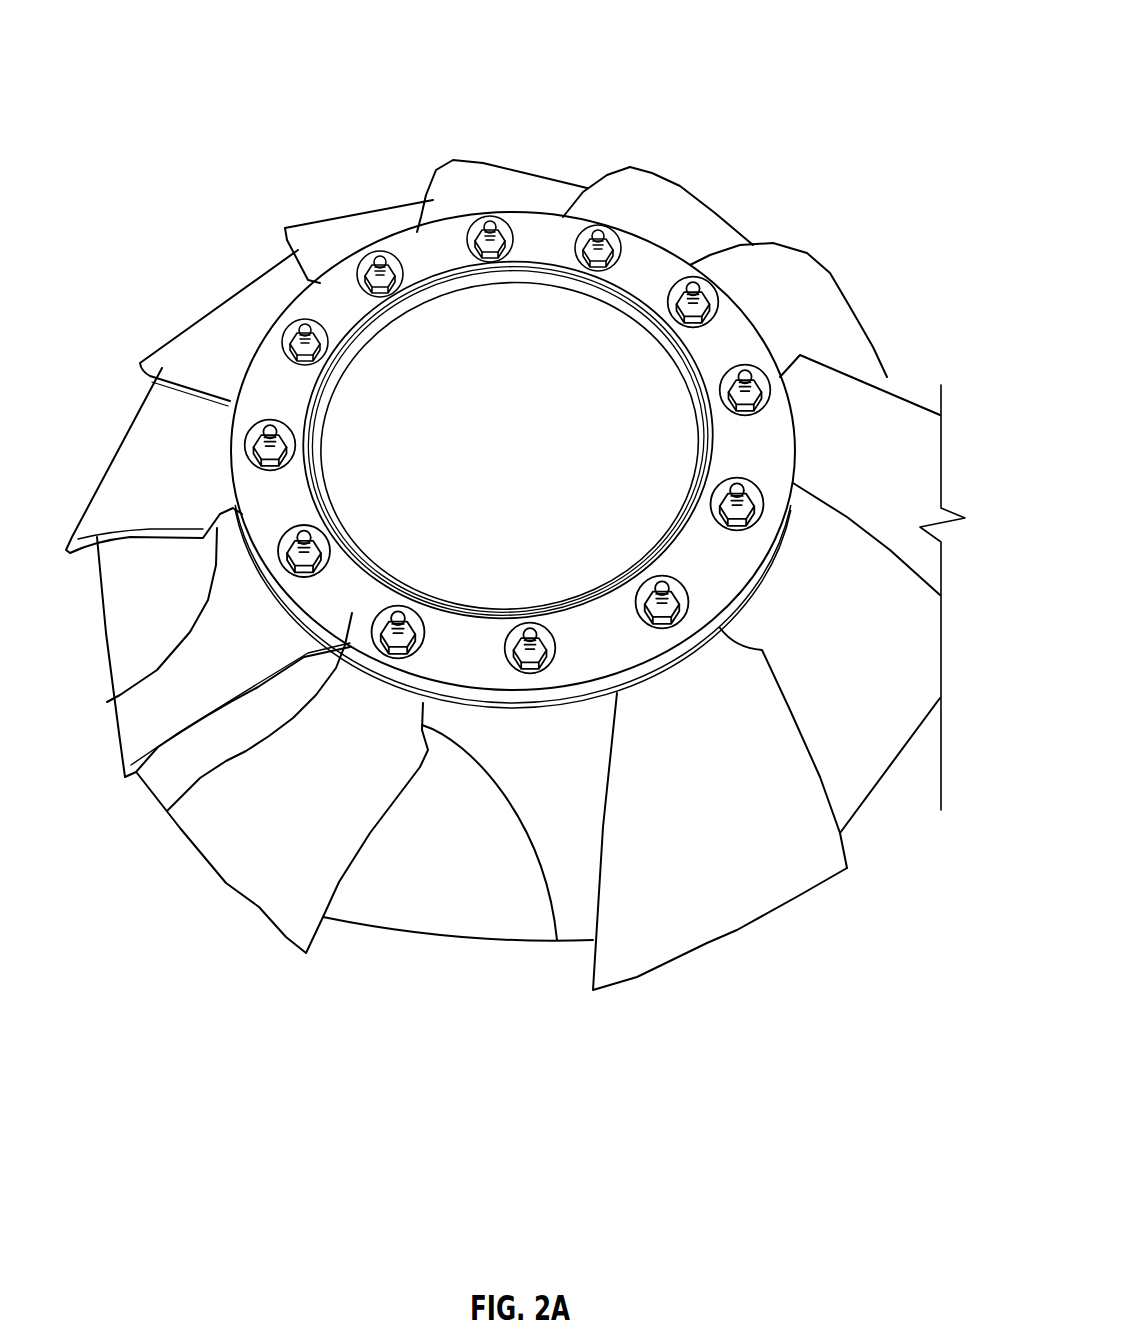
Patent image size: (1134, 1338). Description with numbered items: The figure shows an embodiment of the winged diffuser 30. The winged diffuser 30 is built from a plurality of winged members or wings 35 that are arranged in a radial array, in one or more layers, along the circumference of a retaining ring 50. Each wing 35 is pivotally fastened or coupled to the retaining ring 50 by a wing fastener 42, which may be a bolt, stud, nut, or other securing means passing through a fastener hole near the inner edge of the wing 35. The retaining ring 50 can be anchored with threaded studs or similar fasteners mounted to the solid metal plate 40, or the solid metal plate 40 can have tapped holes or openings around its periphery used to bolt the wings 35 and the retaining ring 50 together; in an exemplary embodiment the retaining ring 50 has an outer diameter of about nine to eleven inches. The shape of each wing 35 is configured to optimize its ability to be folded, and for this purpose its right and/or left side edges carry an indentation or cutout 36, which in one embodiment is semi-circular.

The winged diffuser 30 is at (712, 48).
The wing 35 is at (230, 296).
The cutout 36 is at (107, 702).
The solid metal plate 40 is at (473, 335).
The wing fastener 42 is at (737, 514).
The retaining ring 50 is at (158, 814).